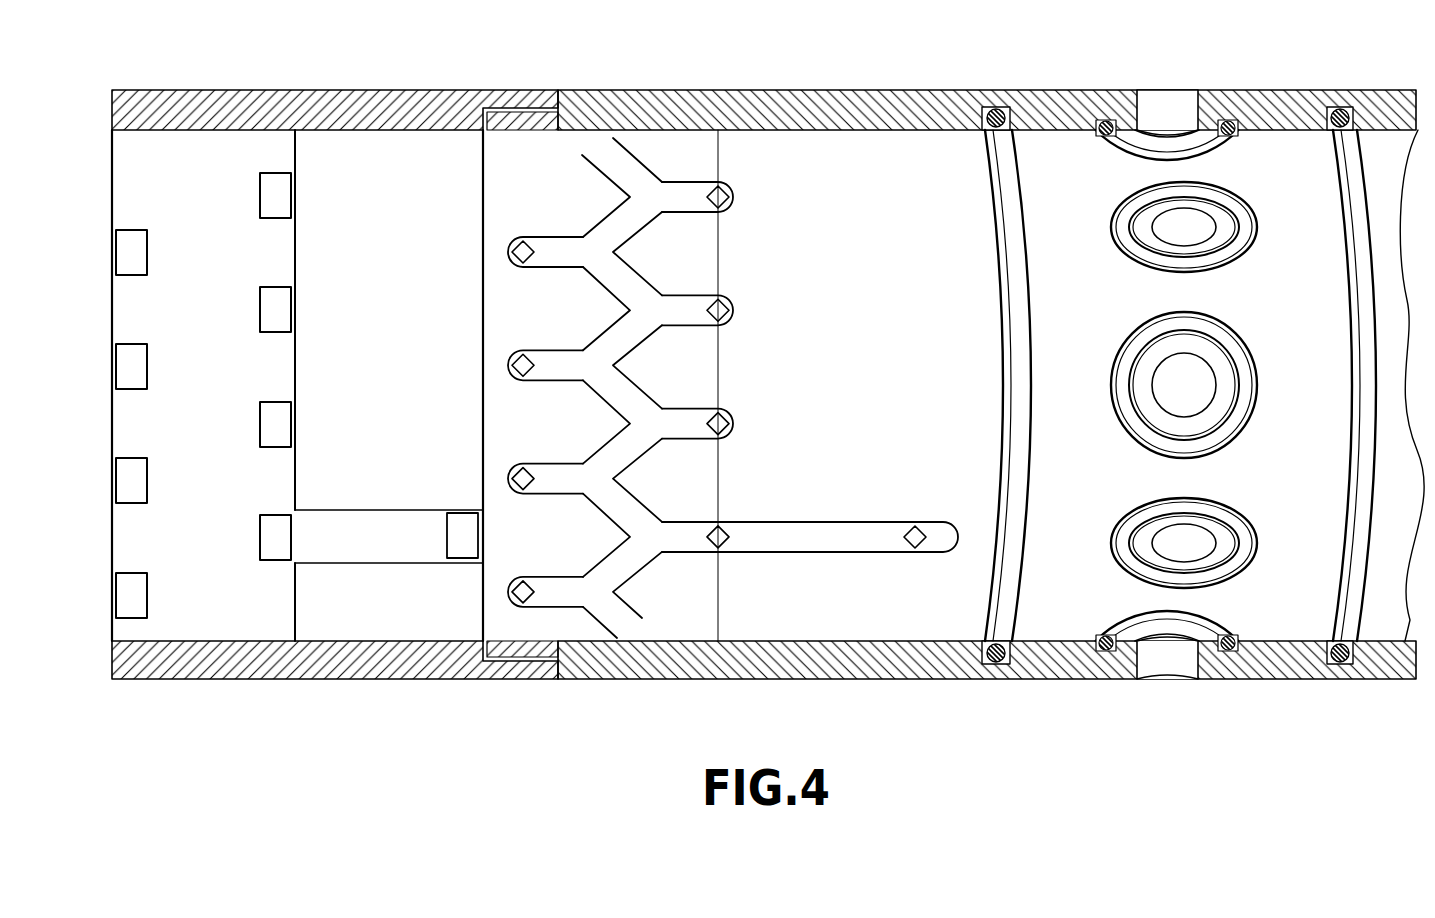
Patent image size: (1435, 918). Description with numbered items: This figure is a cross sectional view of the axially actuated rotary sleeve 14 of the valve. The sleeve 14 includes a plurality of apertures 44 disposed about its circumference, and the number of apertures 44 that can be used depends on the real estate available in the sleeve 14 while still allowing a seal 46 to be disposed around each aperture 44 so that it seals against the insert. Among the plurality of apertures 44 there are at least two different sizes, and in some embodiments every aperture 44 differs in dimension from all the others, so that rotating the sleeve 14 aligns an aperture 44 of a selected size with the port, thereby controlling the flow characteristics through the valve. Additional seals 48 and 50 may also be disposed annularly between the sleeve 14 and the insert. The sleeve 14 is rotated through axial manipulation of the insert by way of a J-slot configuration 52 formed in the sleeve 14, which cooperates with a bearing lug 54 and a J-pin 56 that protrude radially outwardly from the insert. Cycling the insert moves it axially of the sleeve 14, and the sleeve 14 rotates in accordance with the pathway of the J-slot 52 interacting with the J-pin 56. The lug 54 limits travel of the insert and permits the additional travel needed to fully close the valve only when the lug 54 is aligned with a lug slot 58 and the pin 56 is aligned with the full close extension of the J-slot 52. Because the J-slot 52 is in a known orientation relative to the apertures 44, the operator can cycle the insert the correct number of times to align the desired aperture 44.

The sleeve 14 is at (608, 112).
The apertures 44 is at (1170, 112).
The seal 46 is at (1217, 148).
The additional seal 48 is at (1018, 285).
The additional seal 50 is at (1340, 108).
The J-slot configuration 52 is at (638, 157).
The bearing lug 54 is at (463, 537).
The J-pin 56 is at (727, 192).
The lug slot 58 is at (377, 527).